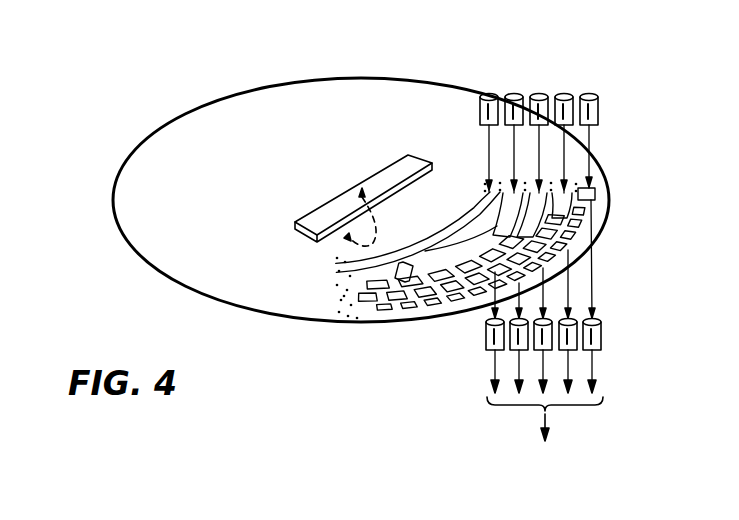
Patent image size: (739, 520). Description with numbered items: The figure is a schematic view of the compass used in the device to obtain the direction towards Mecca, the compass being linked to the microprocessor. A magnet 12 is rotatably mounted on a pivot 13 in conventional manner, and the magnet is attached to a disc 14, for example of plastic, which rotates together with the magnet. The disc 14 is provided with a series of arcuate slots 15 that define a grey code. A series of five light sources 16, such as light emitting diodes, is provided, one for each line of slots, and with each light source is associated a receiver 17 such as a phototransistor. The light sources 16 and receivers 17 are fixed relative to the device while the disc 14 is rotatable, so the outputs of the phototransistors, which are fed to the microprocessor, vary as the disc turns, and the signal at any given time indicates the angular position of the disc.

The magnet 12 is at (384, 171).
The pivot 13 is at (344, 239).
The disc 14 is at (393, 82).
The arcuate slots 15 is at (440, 297).
The light sources 16 is at (538, 88).
The receiver 17 is at (601, 331).